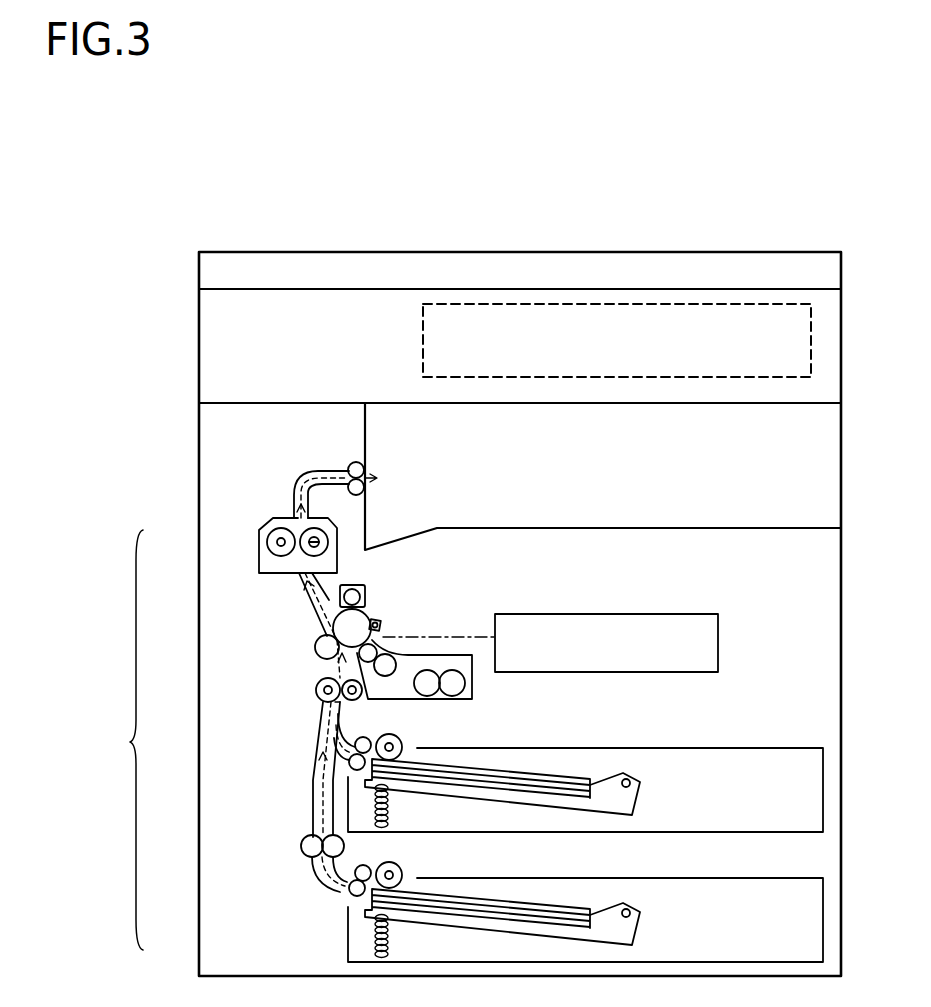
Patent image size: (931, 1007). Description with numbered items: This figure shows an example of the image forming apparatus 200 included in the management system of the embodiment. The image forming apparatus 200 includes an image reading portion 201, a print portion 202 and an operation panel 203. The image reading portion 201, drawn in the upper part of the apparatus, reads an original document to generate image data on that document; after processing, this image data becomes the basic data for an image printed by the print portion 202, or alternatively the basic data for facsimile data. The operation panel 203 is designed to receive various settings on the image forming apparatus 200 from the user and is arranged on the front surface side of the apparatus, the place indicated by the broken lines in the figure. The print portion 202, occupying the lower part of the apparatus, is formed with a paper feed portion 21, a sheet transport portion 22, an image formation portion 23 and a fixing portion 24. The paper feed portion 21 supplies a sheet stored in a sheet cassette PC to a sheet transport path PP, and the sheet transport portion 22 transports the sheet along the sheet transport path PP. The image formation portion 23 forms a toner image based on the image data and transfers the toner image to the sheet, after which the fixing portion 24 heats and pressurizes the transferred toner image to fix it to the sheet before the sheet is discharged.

The image forming apparatus 200 is at (224, 232).
The image reading portion 201 is at (198, 326).
The print portion 202 is at (115, 740).
The operation panel 203 is at (422, 340).
The paper feed portion 21 is at (346, 920).
The sheet transport portion 22 is at (302, 836).
The image formation portion 23 is at (317, 651).
The fixing portion 24 is at (258, 557).
The sheet transport path PP is at (328, 737).
The sheet cassette PC is at (755, 748).